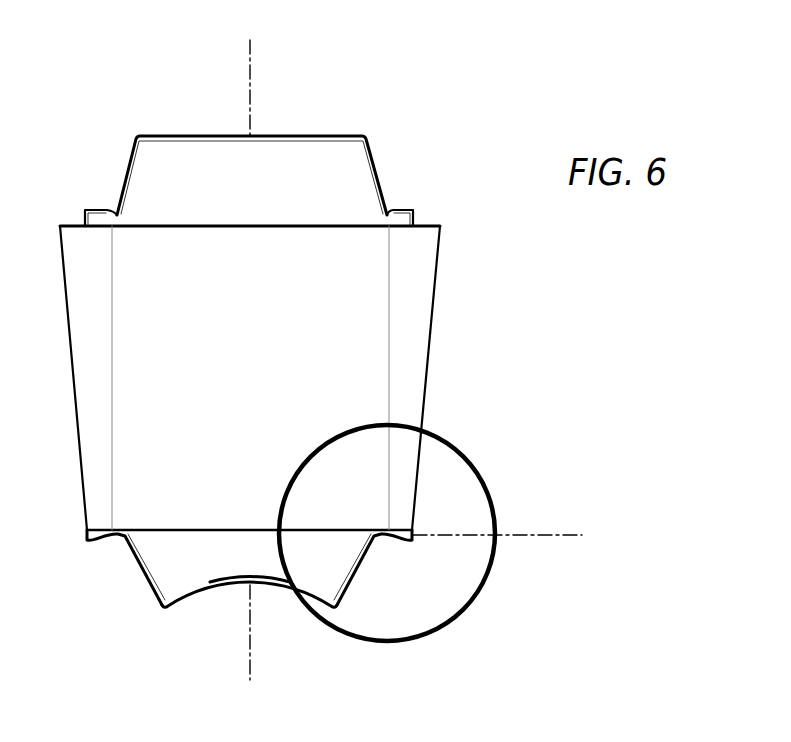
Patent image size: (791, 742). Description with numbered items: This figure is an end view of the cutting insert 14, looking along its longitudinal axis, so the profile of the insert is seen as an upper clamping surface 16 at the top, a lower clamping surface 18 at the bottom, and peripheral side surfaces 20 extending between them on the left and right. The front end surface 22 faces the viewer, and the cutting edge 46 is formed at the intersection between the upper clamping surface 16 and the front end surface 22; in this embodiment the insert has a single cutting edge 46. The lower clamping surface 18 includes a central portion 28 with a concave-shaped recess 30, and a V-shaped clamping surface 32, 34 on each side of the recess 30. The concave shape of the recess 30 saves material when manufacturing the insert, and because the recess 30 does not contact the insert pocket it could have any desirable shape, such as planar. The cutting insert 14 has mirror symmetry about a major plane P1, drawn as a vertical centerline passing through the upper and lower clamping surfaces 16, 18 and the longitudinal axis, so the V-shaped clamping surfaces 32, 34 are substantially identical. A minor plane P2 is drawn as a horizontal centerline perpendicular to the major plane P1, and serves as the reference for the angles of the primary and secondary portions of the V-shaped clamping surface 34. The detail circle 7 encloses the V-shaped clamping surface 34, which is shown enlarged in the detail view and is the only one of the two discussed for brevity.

The cutting insert 14 is at (430, 76).
The upper clamping surface 16 is at (197, 123).
The lower clamping surface 18 is at (188, 637).
The peripheral side surfaces 20 is at (447, 315).
The front end surface 22 is at (254, 365).
The central portion 28 is at (257, 598).
The concave-shaped recess 30 is at (238, 582).
The V-shaped clamping surface 32 is at (118, 548).
The V-shaped clamping surface 34 is at (383, 549).
The cutting edge 46 is at (280, 222).
The detail circle for FIG. 7 is at (463, 453).
The major plane P1 is at (248, 47).
The minor plane P2 is at (557, 535).